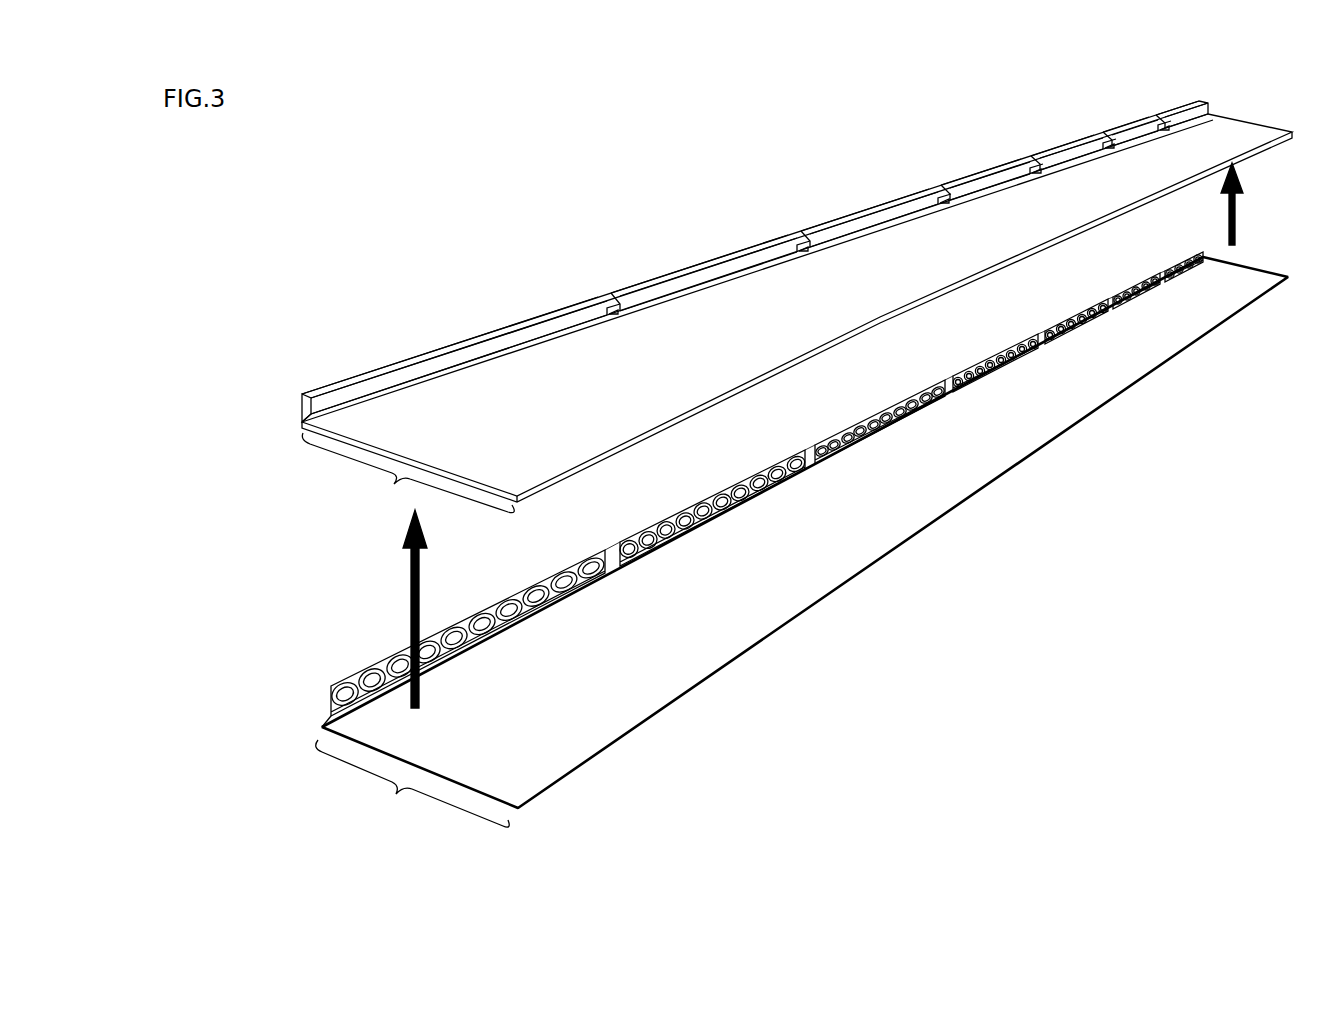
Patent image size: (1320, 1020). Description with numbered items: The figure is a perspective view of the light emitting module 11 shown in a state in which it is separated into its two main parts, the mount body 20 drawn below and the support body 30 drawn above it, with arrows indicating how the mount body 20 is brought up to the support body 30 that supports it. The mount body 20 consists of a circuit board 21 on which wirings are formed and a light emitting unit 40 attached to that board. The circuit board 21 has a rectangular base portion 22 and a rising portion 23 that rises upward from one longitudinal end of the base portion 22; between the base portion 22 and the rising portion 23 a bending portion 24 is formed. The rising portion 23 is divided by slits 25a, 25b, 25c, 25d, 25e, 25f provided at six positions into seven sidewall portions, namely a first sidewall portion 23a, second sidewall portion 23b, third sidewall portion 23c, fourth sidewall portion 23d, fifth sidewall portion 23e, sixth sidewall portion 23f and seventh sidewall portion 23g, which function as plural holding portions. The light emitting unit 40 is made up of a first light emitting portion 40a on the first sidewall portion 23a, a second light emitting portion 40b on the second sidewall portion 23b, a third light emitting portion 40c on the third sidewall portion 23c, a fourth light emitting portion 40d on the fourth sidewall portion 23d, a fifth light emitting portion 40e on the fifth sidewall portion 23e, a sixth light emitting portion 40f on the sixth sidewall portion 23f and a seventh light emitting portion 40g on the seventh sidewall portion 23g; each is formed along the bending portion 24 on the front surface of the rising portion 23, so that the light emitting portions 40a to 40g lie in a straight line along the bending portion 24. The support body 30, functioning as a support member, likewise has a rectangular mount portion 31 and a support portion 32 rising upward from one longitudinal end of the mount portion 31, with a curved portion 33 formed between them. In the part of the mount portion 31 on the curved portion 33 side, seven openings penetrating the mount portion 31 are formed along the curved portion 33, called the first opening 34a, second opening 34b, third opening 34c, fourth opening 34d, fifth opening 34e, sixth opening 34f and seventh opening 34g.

The light emitting module 11 is at (426, 182).
The mount body 20 is at (755, 518).
The circuit board 21 is at (758, 650).
The base portion 22 is at (412, 783).
The rising portion 23 is at (748, 469).
The first sidewall portion 23a is at (467, 632).
The second sidewall portion 23b is at (712, 515).
The third sidewall portion 23c is at (880, 424).
The fourth sidewall portion 23d is at (998, 355).
The fifth sidewall portion 23e is at (1074, 314).
The sixth sidewall portion 23f is at (1139, 277).
The seventh sidewall portion 23g is at (1198, 257).
The bending portion 24 is at (315, 737).
The slit 25a is at (610, 552).
The slit 25b is at (808, 450).
The slit 25c is at (949, 382).
The slit 25d is at (1040, 333).
The slit 25e is at (1110, 300).
The slit 25f is at (1162, 273).
The support body 30 is at (750, 291).
The mount portion 31 is at (408, 473).
The support portion 32 is at (300, 392).
The curved portion 33 is at (296, 432).
The first opening 34a is at (470, 366).
The second opening 34b is at (690, 280).
The third opening 34c is at (870, 220).
The fourth opening 34d is at (978, 192).
The fifth opening 34e is at (1062, 162).
The sixth opening 34f is at (1136, 140).
The seventh opening 34g is at (1185, 117).
The light emitting unit 40 is at (764, 462).
The first light emitting portion 40a is at (480, 650).
The second light emitting portion 40b is at (715, 528).
The third light emitting portion 40c is at (865, 433).
The fourth light emitting portion 40d is at (995, 366).
The fifth light emitting portion 40e is at (1075, 322).
The sixth light emitting portion 40f is at (1140, 290).
The seventh light emitting portion 40g is at (1185, 268).